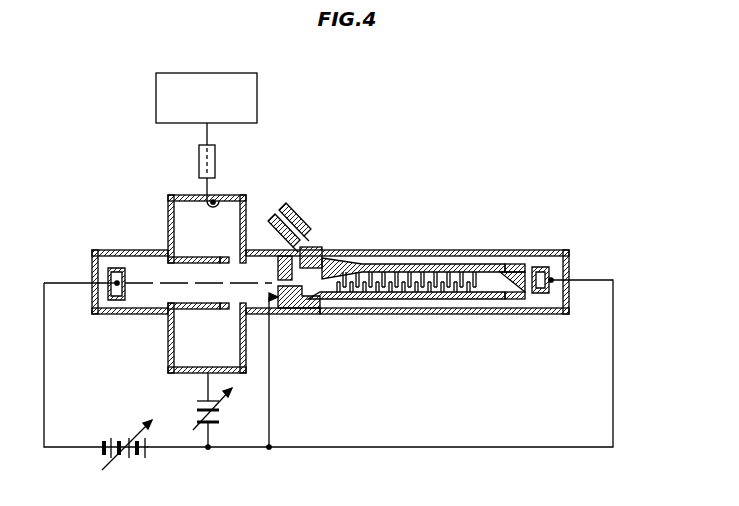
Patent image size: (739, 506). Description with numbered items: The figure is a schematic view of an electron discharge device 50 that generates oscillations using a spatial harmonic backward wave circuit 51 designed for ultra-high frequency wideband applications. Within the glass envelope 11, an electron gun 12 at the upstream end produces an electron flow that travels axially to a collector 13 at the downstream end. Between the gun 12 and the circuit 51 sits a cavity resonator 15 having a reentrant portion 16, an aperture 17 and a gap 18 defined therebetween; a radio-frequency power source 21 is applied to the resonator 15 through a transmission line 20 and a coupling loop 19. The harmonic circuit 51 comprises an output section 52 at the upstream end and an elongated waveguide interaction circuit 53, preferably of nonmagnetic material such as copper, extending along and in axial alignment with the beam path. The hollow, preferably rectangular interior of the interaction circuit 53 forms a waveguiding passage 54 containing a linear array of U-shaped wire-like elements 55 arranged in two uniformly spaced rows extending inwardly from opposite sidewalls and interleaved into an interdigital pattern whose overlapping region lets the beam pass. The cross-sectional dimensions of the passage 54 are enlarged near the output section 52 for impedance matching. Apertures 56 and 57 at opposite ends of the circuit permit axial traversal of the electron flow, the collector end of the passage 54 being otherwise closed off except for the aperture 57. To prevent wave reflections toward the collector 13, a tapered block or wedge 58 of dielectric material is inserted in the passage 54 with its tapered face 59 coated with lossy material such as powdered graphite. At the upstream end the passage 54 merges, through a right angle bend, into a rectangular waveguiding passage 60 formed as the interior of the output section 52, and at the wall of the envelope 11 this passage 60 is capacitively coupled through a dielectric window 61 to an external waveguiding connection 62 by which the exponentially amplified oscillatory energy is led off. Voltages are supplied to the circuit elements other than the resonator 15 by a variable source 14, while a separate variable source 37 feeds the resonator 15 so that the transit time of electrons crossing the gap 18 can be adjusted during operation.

The glass envelope 11 is at (120, 250).
The electron gun 12 is at (117, 300).
The collector 13 is at (545, 294).
The variable source 14 is at (124, 460).
The cavity resonator 15 is at (226, 221).
The reentrant portion 16 is at (216, 338).
The aperture 17 is at (247, 305).
The gap 18 is at (233, 261).
The coupling loop 19 is at (211, 205).
The transmission line 20 is at (216, 160).
The radio-frequency power source 21 is at (254, 97).
The variable source 37 is at (216, 410).
The electron discharge device 50 is at (429, 286).
The spatial harmonic backward wave circuit 51 is at (407, 287).
The output section 52 is at (284, 314).
The waveguide interaction circuit 53 is at (343, 264).
The waveguiding passage 54 is at (380, 299).
The U-shaped wire-like elements 55 is at (418, 265).
The aperture 56 is at (278, 277).
The aperture 57 is at (521, 299).
The tapered block or wedge 58 is at (515, 262).
The tapered face 59 is at (488, 270).
The waveguiding passage 60 is at (302, 289).
The dielectric window 61 is at (306, 247).
The external waveguiding connection 62 is at (287, 226).